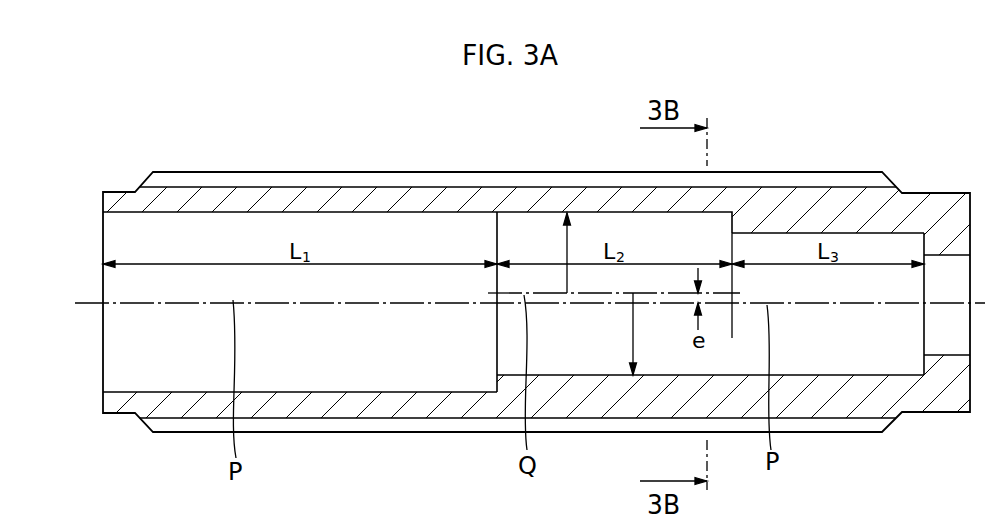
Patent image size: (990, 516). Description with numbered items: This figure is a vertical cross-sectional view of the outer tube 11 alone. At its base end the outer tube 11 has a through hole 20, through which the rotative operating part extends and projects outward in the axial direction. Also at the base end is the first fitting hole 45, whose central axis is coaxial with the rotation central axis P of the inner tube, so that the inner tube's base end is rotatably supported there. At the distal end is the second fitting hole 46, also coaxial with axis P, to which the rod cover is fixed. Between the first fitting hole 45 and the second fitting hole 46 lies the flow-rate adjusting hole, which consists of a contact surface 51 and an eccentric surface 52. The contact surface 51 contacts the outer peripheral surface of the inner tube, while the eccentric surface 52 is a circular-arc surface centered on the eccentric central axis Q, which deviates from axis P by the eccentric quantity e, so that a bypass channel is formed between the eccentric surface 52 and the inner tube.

The outer tube 11 is at (840, 190).
The through hole 20 is at (939, 355).
The first fitting hole 45 is at (885, 233).
The second fitting hole 46 is at (354, 392).
The contact surface 51 is at (720, 375).
The eccentric surface 52 is at (605, 213).